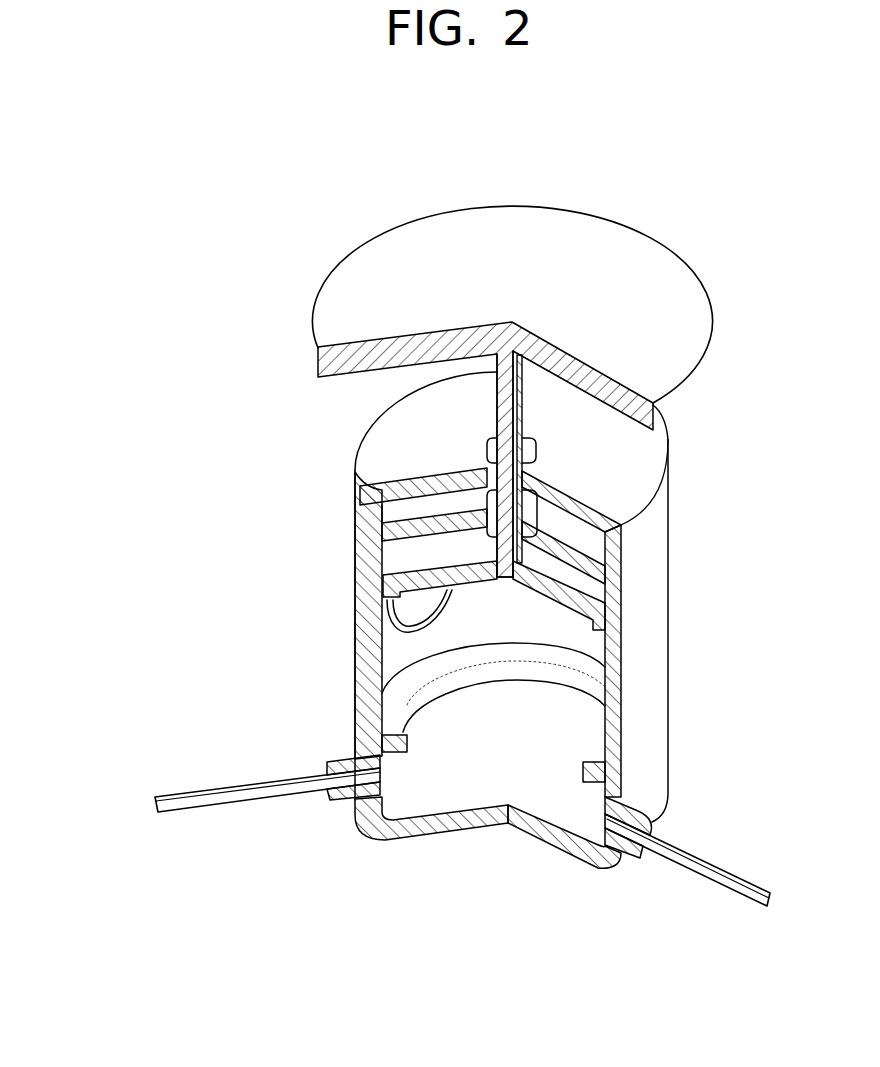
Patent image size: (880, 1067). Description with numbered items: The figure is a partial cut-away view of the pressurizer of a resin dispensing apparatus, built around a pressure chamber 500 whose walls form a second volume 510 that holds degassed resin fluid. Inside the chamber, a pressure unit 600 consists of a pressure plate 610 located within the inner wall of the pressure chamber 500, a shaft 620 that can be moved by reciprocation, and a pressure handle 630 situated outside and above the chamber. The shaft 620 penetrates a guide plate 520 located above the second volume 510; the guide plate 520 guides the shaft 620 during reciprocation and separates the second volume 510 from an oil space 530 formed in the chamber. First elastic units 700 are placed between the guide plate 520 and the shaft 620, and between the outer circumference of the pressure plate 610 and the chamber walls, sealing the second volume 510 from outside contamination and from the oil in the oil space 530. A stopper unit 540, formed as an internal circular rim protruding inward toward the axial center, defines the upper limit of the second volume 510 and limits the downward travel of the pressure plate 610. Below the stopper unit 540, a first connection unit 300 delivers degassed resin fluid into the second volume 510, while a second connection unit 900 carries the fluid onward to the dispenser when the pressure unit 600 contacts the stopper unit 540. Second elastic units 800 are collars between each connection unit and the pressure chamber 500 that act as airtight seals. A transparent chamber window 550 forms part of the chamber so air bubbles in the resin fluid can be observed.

The first connection unit 300 is at (232, 808).
The pressure chamber 500 is at (262, 489).
The second volume 510 is at (472, 625).
The guide plate 520 is at (398, 530).
The oil space 530 is at (410, 513).
The stopper unit 540 is at (355, 737).
The chamber window 550 is at (412, 611).
The pressure unit 600 is at (793, 403).
The pressure plate 610 is at (533, 594).
The shaft 620 is at (522, 430).
The pressure handle 630 is at (653, 404).
The first elastic units 700 is at (487, 517).
The second elastic units 800 is at (350, 800).
The second connection unit 900 is at (737, 893).